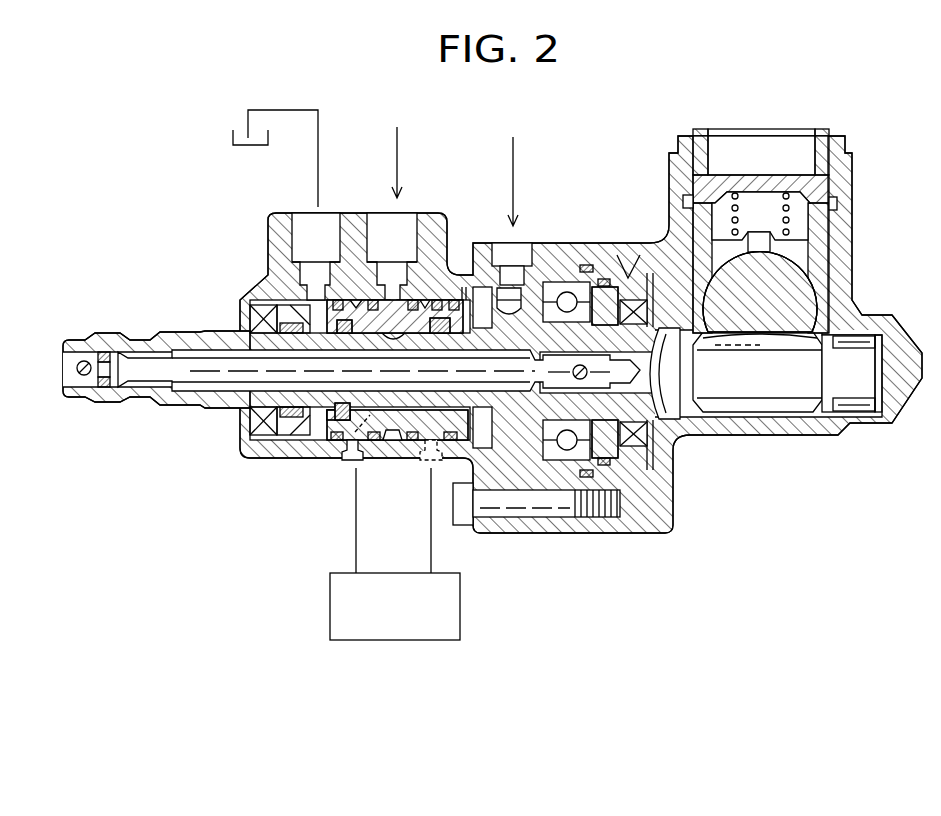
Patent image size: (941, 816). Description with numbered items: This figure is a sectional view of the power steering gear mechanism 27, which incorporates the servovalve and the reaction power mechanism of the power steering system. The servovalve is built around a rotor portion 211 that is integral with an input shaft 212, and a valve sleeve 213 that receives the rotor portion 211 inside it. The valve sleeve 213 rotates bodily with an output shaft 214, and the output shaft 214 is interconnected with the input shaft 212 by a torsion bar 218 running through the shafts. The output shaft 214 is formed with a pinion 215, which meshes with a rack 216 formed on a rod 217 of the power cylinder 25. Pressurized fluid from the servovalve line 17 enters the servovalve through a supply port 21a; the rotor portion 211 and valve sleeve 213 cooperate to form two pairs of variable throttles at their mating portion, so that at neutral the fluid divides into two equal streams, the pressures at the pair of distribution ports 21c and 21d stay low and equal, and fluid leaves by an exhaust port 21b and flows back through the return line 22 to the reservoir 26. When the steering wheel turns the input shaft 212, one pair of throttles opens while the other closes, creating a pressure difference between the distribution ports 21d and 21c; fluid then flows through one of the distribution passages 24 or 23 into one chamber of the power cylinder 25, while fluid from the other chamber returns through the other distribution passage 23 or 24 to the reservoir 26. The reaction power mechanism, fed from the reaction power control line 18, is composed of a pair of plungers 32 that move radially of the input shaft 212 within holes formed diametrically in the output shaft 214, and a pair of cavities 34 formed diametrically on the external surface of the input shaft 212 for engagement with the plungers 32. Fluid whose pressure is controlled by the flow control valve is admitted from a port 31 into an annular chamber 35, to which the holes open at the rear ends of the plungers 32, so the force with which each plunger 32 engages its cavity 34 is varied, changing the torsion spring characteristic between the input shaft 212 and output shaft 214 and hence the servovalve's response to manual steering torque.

The servovalve line 17 is at (399, 137).
The reaction power control line 18 is at (515, 158).
The supply port 21a is at (408, 222).
The exhaust port 21b is at (296, 226).
The distribution port 21c is at (348, 460).
The distribution port 21d is at (428, 460).
The return line 22 is at (320, 127).
The distribution passage 23 is at (354, 550).
The distribution passage 24 is at (433, 562).
The power cylinder 25 is at (333, 627).
The reservoir 26 is at (232, 137).
The power steering gear mechanism 27 is at (610, 170).
The port 31 is at (517, 252).
The plunger 32 is at (545, 298).
The cavity 34 is at (592, 270).
The annular chamber 35 is at (512, 430).
The rotor portion 211 is at (400, 412).
The input shaft 212 is at (124, 396).
The valve sleeve 213 is at (440, 300).
The output shaft 214 is at (662, 422).
The pinion 215 is at (765, 393).
The rack 216 is at (788, 347).
The rod 217 is at (785, 282).
The torsion bar 218 is at (230, 365).